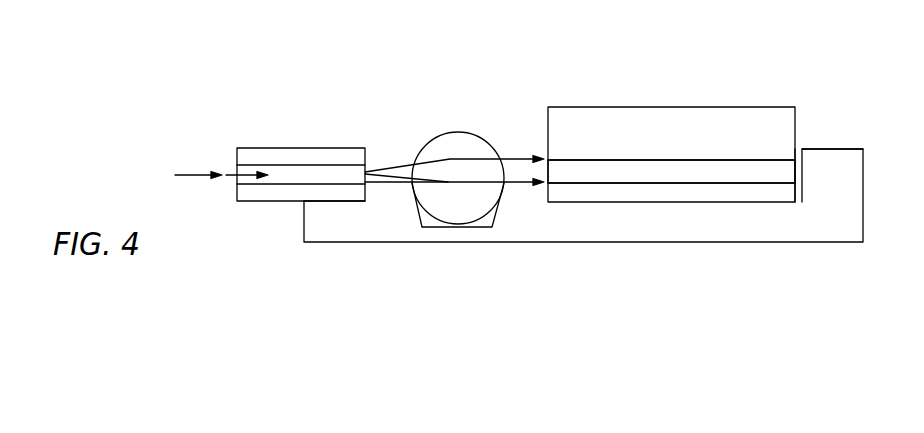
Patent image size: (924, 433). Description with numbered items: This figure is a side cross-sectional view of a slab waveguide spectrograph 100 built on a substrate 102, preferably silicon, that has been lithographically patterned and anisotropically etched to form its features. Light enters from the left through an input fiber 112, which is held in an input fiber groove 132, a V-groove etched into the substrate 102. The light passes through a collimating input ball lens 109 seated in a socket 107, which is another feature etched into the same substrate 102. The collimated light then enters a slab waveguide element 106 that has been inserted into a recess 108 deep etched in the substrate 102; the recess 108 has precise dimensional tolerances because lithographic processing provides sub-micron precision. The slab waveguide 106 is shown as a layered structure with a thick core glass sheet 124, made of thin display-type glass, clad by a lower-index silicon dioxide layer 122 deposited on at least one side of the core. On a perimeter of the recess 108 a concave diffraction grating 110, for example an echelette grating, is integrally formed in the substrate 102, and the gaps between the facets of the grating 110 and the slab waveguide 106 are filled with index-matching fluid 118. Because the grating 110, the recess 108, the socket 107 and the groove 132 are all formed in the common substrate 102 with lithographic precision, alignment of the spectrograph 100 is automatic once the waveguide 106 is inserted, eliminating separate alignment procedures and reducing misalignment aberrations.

The slab waveguide spectrograph 100 is at (225, 98).
The substrate 102 is at (863, 189).
The slab waveguide element 106 is at (739, 115).
The socket 107 is at (490, 220).
The recess 108 is at (620, 195).
The collimating input ball lens 109 is at (470, 140).
The concave diffraction grating 110 is at (803, 149).
The input fiber 112 is at (266, 148).
The index-matching fluid 118 is at (806, 143).
The silicon dioxide layer 122 is at (606, 115).
The core glass sheet 124 is at (546, 168).
The input fiber groove 132 is at (366, 194).